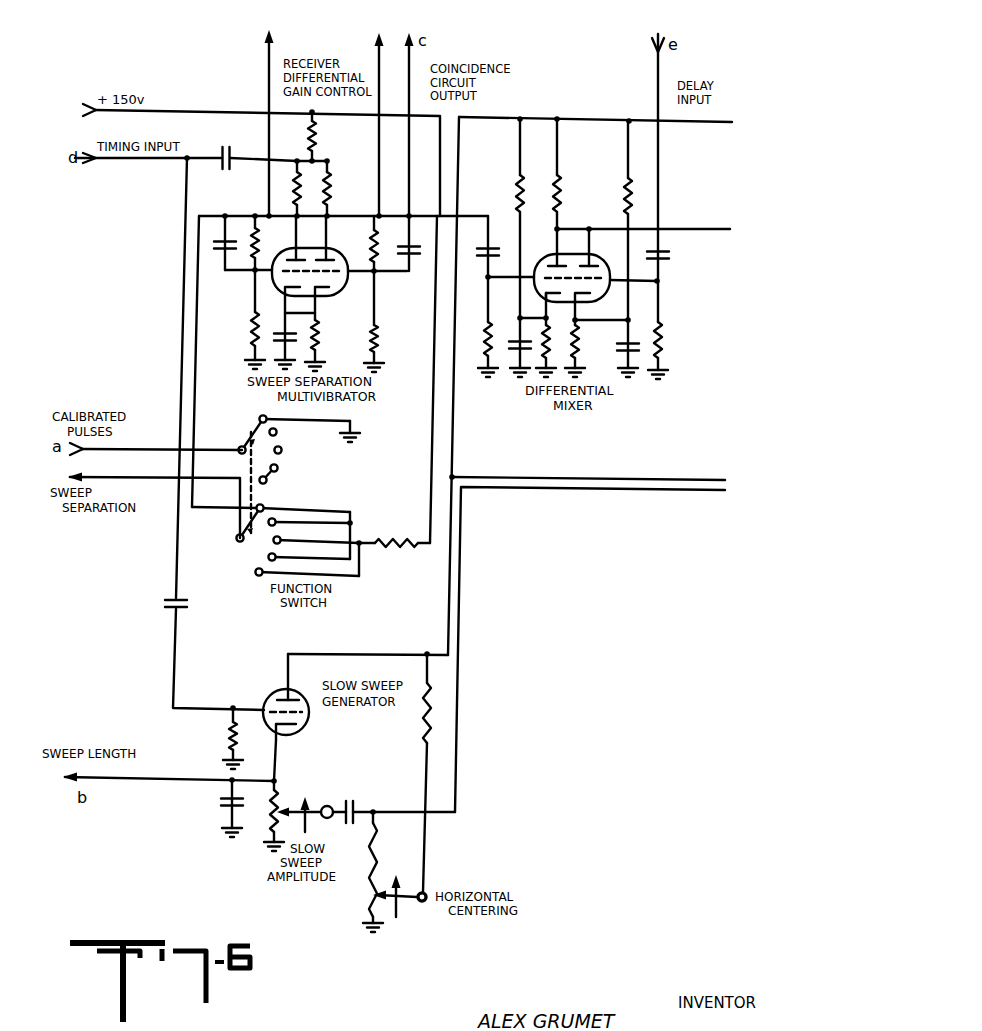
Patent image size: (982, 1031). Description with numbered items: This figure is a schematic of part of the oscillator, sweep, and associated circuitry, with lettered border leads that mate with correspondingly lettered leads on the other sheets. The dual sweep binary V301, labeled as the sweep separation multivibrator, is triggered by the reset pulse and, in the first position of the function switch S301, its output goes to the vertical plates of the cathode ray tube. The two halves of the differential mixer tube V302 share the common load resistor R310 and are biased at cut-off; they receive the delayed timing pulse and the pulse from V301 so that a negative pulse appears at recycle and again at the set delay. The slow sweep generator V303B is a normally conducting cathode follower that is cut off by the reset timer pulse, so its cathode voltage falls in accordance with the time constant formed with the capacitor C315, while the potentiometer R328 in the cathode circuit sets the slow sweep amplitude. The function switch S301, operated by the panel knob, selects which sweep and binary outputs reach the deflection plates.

The dual sweep binary V301 is at (315, 264).
The differential mixer tube V302 is at (572, 253).
The slow sweep generator V303B is at (312, 697).
The common load resistor R310 is at (575, 174).
The slow sweep amplitude potentiometer R328 is at (292, 815).
The capacitor C315 is at (216, 808).
The function switch S301 is at (280, 495).